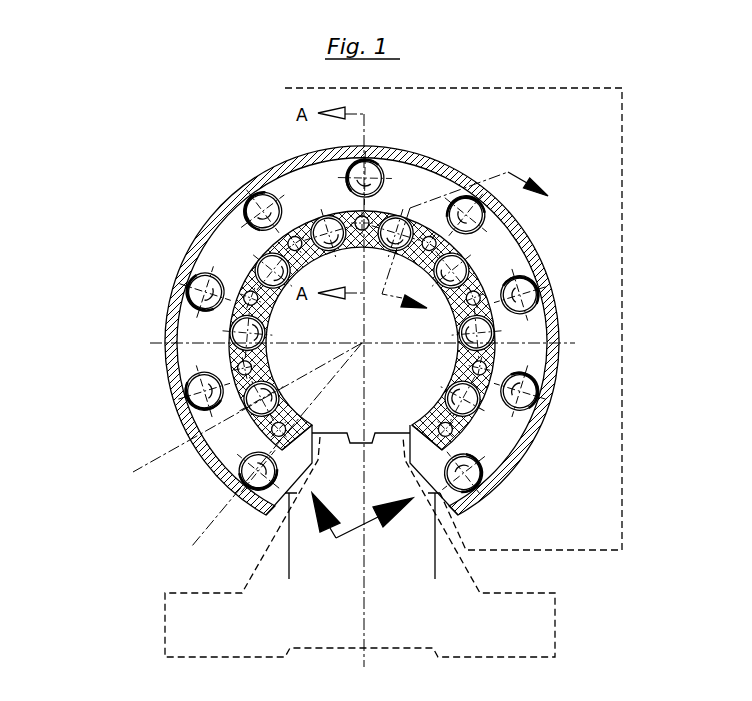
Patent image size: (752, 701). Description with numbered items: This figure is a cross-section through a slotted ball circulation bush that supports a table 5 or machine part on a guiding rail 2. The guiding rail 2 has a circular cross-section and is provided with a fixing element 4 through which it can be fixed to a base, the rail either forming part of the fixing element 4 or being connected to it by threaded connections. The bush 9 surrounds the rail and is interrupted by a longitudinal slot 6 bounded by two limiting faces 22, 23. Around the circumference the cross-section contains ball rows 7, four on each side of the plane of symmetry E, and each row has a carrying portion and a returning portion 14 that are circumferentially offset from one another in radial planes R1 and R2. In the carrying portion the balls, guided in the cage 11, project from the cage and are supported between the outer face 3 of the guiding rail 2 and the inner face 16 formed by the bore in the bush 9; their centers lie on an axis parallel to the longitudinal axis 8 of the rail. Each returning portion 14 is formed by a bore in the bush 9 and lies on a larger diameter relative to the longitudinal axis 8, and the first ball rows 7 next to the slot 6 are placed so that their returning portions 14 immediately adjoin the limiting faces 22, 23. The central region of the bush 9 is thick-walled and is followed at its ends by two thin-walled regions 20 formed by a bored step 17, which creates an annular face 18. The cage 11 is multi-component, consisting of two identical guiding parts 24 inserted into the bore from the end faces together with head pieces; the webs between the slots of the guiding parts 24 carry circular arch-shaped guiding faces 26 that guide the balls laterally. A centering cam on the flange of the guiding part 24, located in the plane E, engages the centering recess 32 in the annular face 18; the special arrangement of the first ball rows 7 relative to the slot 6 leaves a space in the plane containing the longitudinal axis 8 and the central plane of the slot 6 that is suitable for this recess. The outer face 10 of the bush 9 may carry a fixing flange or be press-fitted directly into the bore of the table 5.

The guiding rail 2 is at (330, 226).
The outer face 3 is at (483, 280).
The fixing element 4 is at (264, 641).
The table 5 is at (405, 107).
The longitudinal slot 6 is at (336, 538).
The ball rows 7 is at (340, 222).
The longitudinal axis 8 is at (362, 343).
The bush 9 is at (230, 227).
The outer face 10 is at (545, 262).
The cage 11 is at (486, 302).
The returning portion 14 is at (187, 383).
The inner face 16 is at (230, 351).
The bored step 17 is at (513, 460).
The annular face 18 is at (449, 495).
The thin-walled regions 20 is at (493, 483).
The limiting face 22 is at (289, 579).
The limiting face 23 is at (435, 579).
The guiding part 24 is at (294, 438).
The guiding faces 26 is at (495, 315).
The centering recess 32 is at (410, 208).
The radial plane R1 is at (147, 464).
The radial plane R2 is at (208, 528).
The plane of symmetry E is at (358, 625).